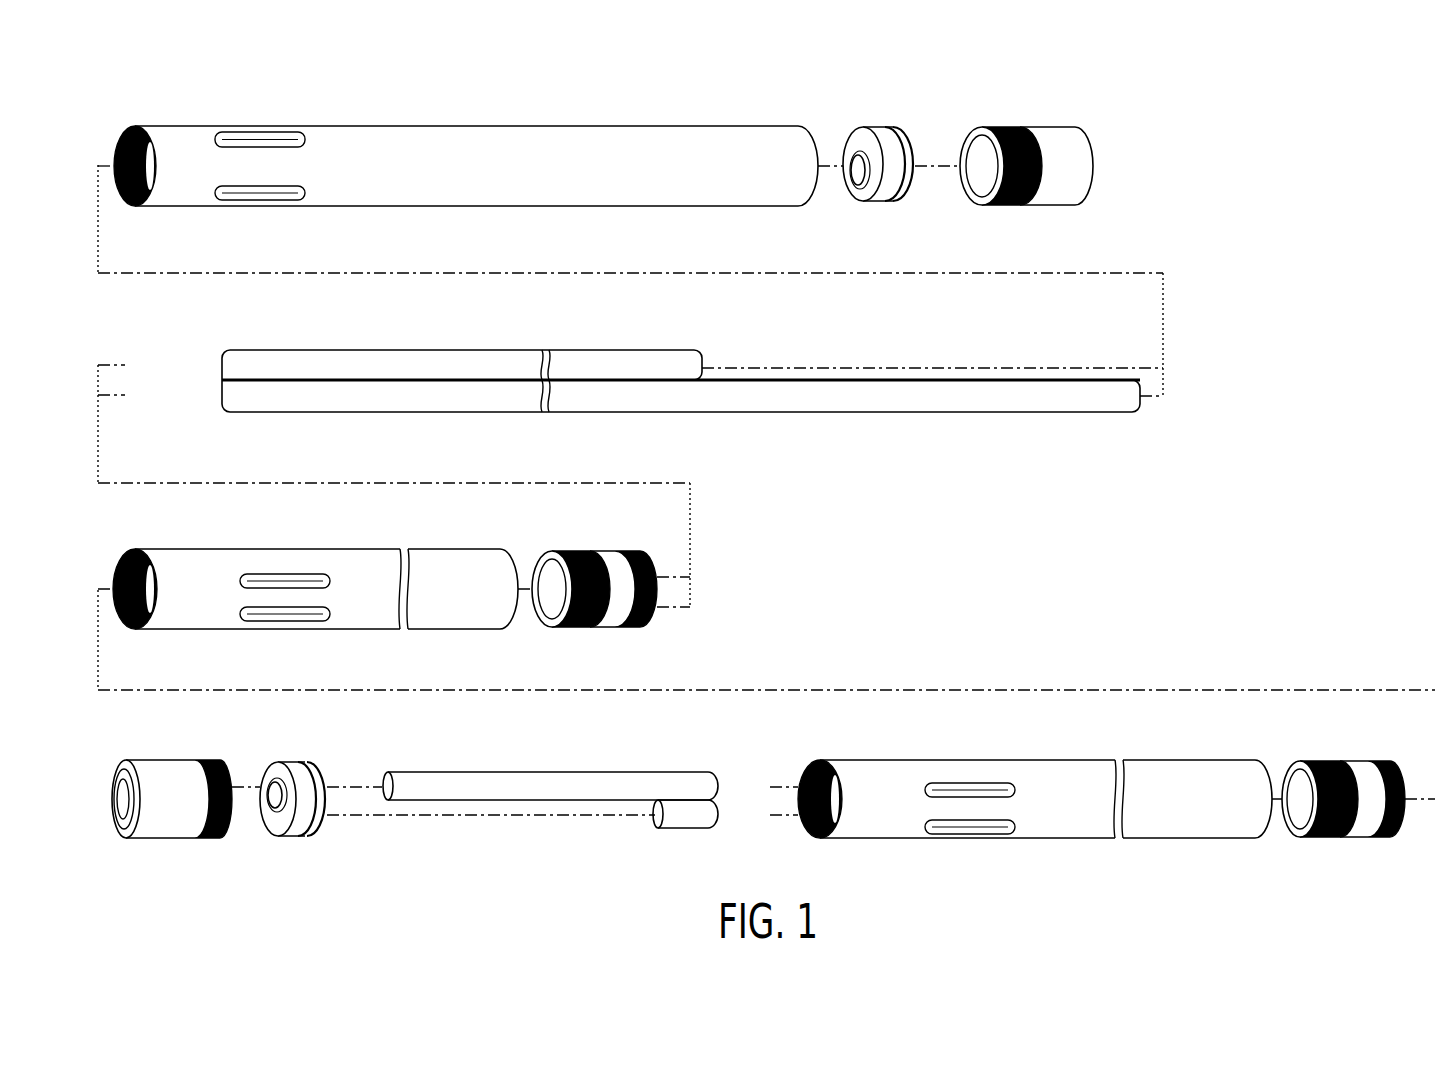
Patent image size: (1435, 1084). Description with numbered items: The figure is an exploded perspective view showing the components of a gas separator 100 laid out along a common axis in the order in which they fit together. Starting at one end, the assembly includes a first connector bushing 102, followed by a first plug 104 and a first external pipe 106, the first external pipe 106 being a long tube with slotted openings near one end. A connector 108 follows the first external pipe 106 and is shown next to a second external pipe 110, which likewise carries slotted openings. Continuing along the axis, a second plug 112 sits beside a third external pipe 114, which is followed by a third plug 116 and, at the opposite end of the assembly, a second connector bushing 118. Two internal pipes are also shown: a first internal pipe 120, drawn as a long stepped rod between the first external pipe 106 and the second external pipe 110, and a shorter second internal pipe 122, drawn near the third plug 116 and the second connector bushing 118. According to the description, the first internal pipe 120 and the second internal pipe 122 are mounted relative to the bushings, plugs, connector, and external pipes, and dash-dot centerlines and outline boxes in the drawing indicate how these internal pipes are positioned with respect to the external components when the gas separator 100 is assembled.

The gas separator 100 is at (1260, 338).
The first connector bushing 102 is at (1103, 163).
The first plug 104 is at (905, 103).
The first external pipe 106 is at (587, 103).
The connector 108 is at (658, 588).
The second external pipe 110 is at (450, 592).
The second plug 112 is at (1350, 852).
The third external pipe 114 is at (1030, 852).
The third plug 116 is at (317, 853).
The second connector bushing 118 is at (193, 853).
The first internal pipe 120 is at (950, 412).
The second internal pipe 122 is at (553, 762).